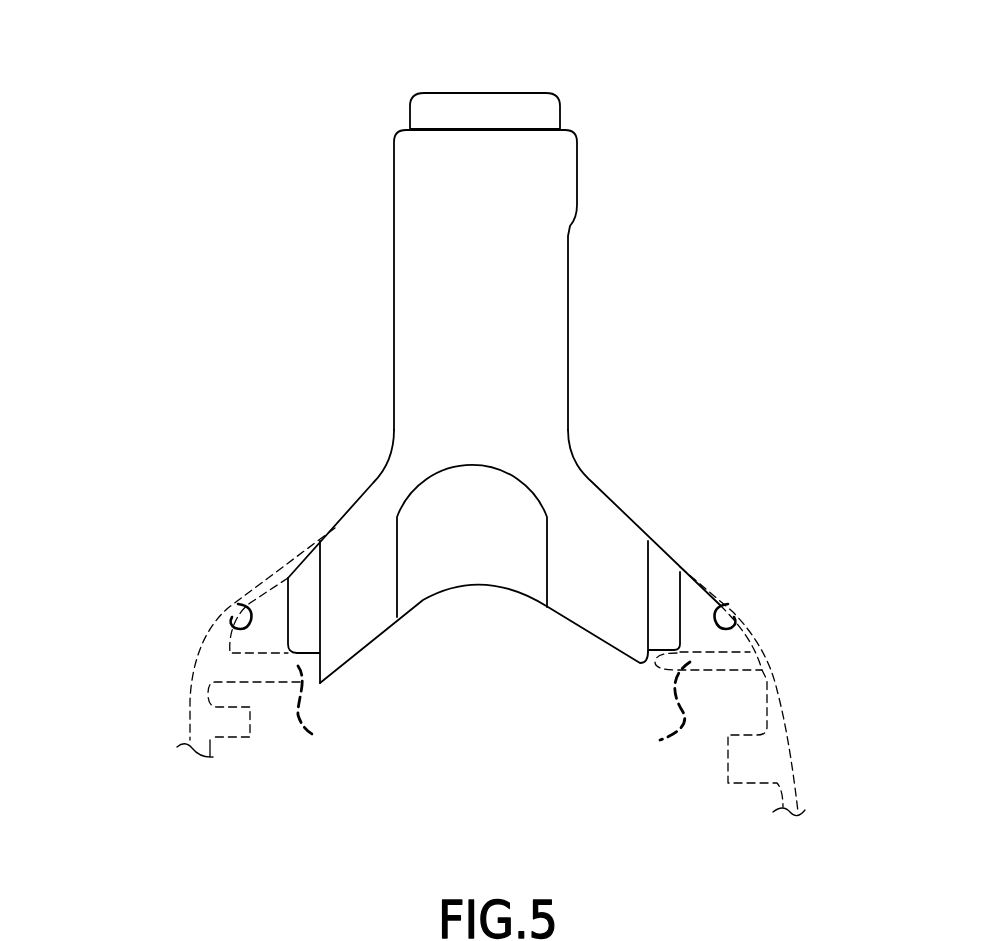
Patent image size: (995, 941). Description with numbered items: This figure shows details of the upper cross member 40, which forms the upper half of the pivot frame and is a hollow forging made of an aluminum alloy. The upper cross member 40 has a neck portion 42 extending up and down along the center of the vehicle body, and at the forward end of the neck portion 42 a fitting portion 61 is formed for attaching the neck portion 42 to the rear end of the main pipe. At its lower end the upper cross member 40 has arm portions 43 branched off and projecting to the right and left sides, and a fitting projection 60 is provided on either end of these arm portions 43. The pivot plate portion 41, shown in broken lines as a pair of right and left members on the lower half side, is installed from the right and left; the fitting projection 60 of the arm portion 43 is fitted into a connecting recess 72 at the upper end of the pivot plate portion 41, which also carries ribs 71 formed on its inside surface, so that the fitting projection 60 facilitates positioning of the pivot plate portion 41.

The upper cross member 40 is at (347, 270).
The pivot plate portion 41 is at (158, 701).
The neck portion 42 is at (553, 273).
The arm portion 43 is at (351, 535).
The fitting projection 60 is at (300, 590).
The fitting portion 61 is at (483, 92).
The rib 71 is at (238, 723).
The connecting recess 72 is at (243, 600).